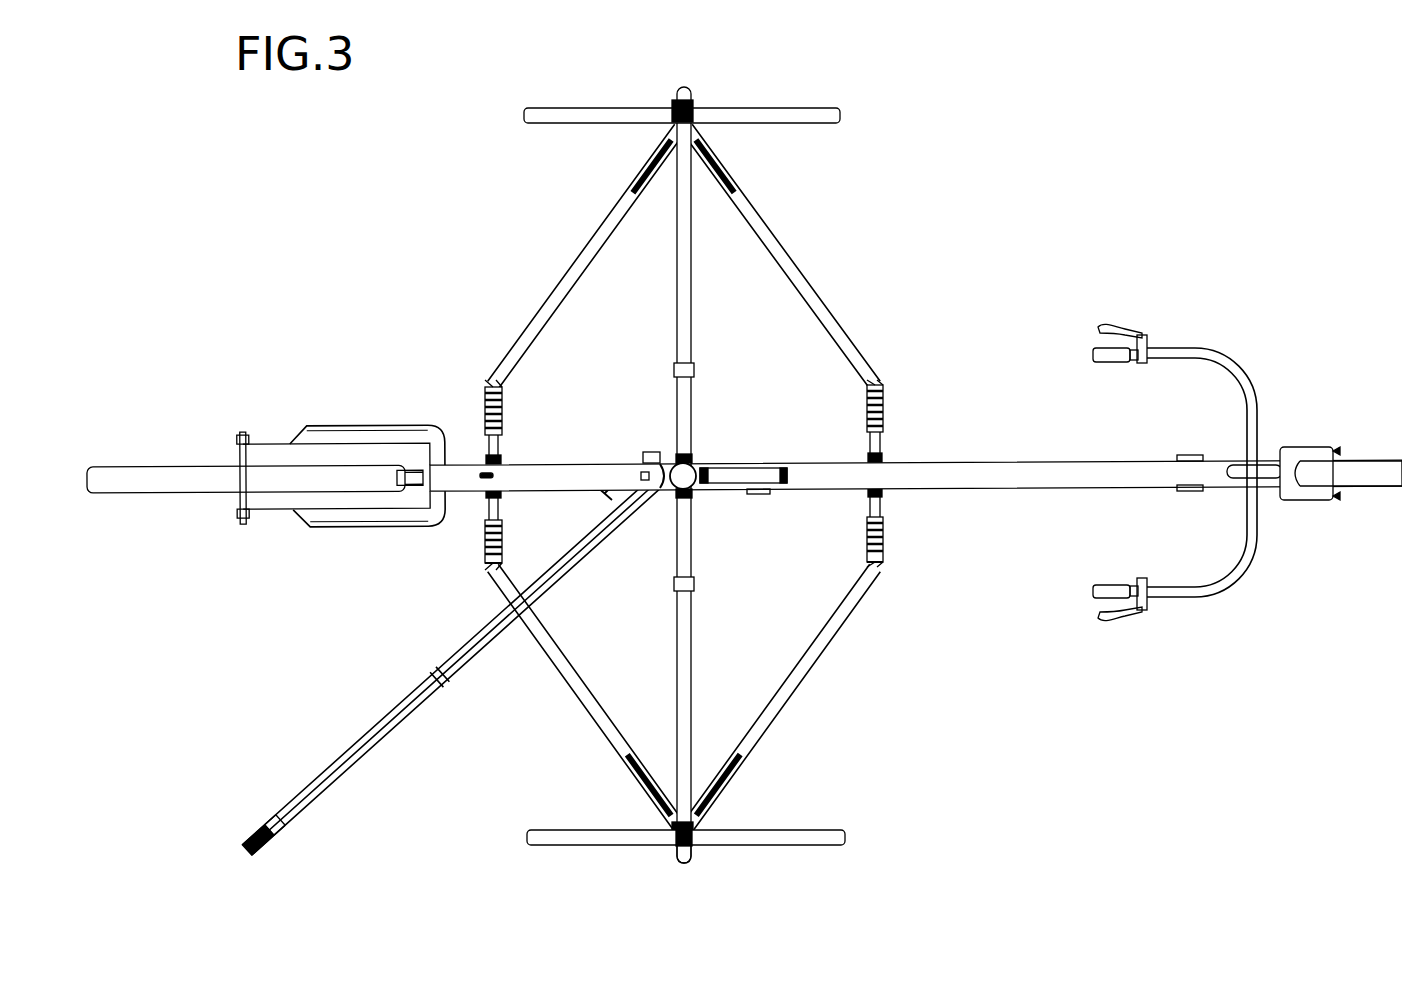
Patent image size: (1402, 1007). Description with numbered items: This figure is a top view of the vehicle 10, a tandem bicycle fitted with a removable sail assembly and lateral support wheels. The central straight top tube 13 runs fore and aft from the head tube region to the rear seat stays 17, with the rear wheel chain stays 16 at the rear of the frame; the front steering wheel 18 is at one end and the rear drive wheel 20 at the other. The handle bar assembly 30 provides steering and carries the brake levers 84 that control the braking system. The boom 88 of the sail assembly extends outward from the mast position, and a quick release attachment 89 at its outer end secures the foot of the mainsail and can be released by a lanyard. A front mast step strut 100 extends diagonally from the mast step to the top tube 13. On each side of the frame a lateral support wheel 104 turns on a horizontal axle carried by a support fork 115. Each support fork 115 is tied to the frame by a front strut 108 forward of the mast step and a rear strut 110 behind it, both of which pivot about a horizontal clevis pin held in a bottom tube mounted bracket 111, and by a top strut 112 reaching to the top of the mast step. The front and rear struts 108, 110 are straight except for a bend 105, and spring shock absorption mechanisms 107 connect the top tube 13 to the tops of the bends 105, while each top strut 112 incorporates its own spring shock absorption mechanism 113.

The vehicle 10 is at (455, 240).
The top tube 13 is at (1045, 482).
The rear wheel chain stays 16 is at (460, 498).
The rear seat stays 17 is at (365, 515).
The front steering wheel 18 is at (1401, 450).
The rear drive wheel 20 is at (150, 478).
The handle bar assembly 30 is at (1233, 563).
The brake levers 84 is at (1143, 335).
The boom 88 is at (393, 727).
The quick release attachment 89 is at (263, 847).
The front mast step strut 100 is at (750, 478).
The support wheels 104 is at (757, 837).
The bend 105 is at (880, 565).
The spring shock absorption mechanism 107 is at (483, 412).
The front strut 108 is at (780, 695).
The rear strut 110 is at (607, 720).
The bottom tube mounted bracket 111 is at (880, 458).
The top strut 112 is at (683, 538).
The spring shock absorption mechanism 113 is at (683, 765).
The support fork 115 is at (680, 858).